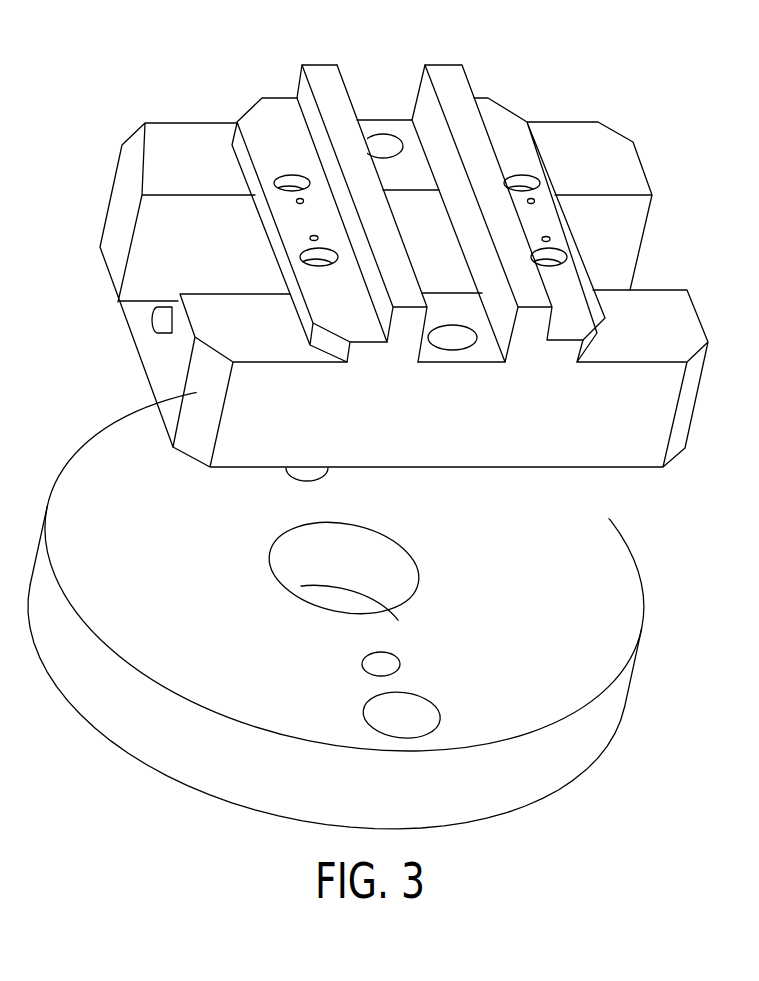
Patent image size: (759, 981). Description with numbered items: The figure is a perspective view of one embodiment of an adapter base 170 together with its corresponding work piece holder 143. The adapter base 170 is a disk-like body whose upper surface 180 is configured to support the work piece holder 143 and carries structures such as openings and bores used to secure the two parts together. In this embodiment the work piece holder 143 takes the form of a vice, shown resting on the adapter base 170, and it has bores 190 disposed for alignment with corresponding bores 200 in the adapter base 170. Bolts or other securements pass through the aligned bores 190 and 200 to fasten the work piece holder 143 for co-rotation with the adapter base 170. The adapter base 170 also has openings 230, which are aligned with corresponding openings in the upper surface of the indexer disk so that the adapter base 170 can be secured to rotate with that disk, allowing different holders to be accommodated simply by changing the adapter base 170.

The work piece holder 143 is at (587, 149).
The adapter base 170 is at (602, 557).
The upper surface 180 is at (507, 580).
The bores 190 is at (377, 138).
The bores 200 is at (303, 478).
The openings 230 is at (422, 716).